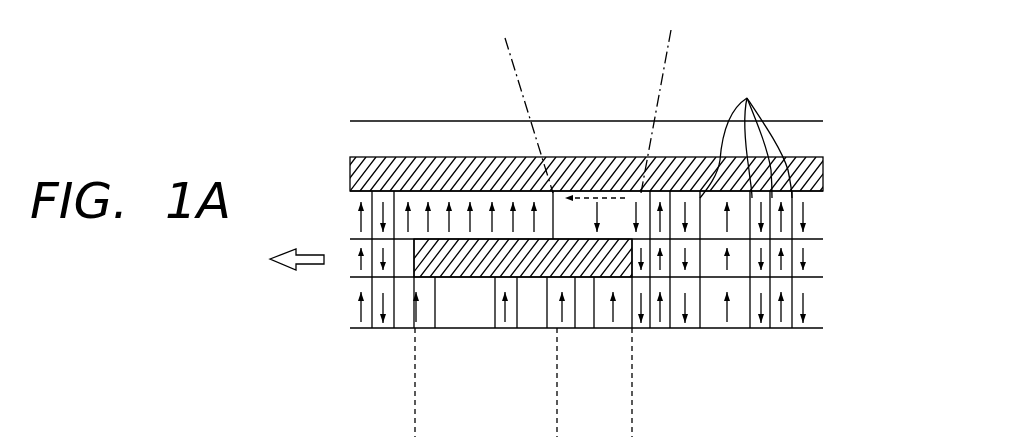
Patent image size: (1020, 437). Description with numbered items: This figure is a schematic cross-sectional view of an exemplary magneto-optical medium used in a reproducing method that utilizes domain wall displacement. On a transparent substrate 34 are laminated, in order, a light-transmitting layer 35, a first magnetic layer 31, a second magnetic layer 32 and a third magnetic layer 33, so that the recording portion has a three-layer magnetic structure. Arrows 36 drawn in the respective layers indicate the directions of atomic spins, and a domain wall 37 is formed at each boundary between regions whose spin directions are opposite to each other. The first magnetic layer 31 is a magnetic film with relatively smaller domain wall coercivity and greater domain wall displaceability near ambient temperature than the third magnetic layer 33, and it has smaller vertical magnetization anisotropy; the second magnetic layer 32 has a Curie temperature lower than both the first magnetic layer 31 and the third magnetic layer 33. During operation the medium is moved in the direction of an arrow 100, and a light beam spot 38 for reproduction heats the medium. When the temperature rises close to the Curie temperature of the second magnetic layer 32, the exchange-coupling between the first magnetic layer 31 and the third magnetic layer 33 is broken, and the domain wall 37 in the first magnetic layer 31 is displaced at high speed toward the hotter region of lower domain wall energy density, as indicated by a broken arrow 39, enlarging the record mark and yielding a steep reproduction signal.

The arrow 100 is at (277, 266).
The first magnetic layer 31 is at (818, 223).
The second magnetic layer 32 is at (818, 263).
The third magnetic layer 33 is at (818, 313).
The transparent substrate 34 is at (812, 141).
The light-transmitting layer 35 is at (812, 178).
The arrows 36 is at (805, 298).
The domain wall 37 is at (746, 136).
The light beam spot 38 is at (667, 68).
The broken arrow 39 is at (599, 195).